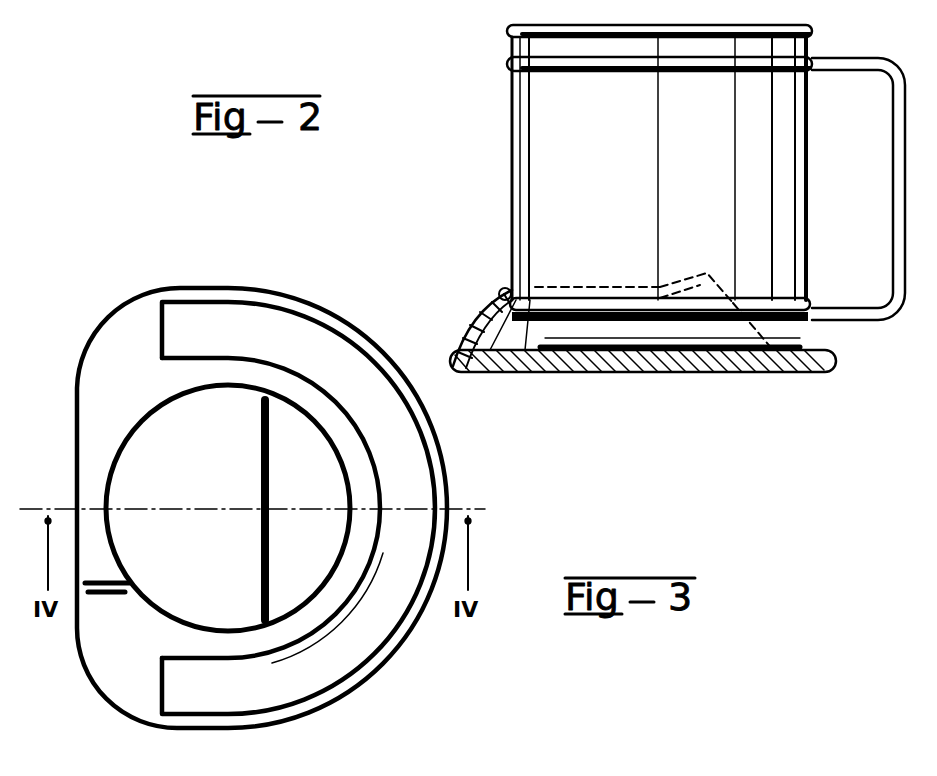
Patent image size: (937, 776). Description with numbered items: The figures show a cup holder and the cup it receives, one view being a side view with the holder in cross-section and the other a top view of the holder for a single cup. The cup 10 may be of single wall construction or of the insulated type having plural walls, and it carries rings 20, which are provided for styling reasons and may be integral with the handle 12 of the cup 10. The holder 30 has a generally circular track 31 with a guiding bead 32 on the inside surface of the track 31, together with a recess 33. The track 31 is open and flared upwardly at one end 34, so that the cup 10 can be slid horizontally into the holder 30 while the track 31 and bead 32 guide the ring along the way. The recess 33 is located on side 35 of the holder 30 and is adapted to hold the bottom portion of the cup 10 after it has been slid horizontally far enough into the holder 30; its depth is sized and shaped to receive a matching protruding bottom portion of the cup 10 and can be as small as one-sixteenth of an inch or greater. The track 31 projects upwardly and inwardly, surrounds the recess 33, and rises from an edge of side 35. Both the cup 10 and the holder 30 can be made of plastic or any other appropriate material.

In FIG. 2, the cup 10 is at (508, 172).
In FIG. 2, the handle 12 is at (892, 160).
In FIG. 2, the rings 20 is at (507, 63).
In FIG. 2, the holder 30 is at (503, 373).
In FIG. 3, the holder 30 is at (121, 342).
In FIG. 2, the track 31 is at (480, 330).
In FIG. 3, the track 31 is at (418, 482).
In FIG. 2, the guiding bead 32 is at (500, 290).
In FIG. 2, the recess 33 is at (516, 356).
In FIG. 3, the recess 33 is at (183, 590).
In FIG. 2, the end 34 is at (737, 352).
In FIG. 3, the end 34 is at (178, 600).
In FIG. 2, the side 35 is at (660, 353).
In FIG. 3, the side 35 is at (105, 440).